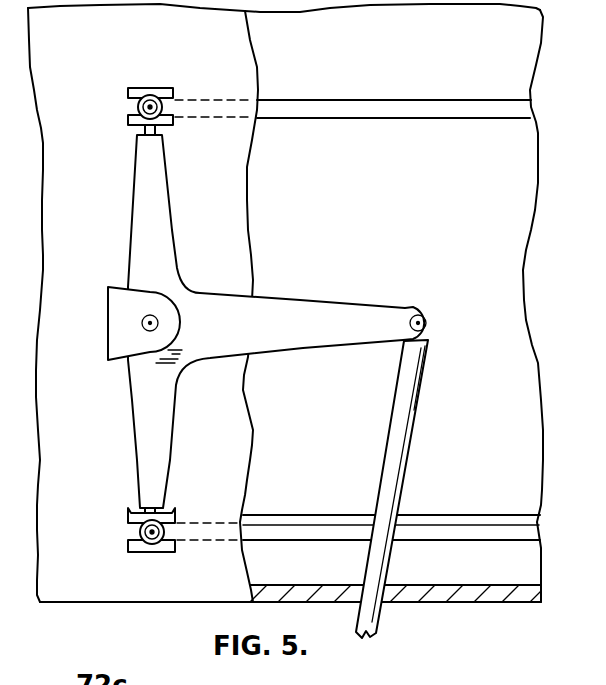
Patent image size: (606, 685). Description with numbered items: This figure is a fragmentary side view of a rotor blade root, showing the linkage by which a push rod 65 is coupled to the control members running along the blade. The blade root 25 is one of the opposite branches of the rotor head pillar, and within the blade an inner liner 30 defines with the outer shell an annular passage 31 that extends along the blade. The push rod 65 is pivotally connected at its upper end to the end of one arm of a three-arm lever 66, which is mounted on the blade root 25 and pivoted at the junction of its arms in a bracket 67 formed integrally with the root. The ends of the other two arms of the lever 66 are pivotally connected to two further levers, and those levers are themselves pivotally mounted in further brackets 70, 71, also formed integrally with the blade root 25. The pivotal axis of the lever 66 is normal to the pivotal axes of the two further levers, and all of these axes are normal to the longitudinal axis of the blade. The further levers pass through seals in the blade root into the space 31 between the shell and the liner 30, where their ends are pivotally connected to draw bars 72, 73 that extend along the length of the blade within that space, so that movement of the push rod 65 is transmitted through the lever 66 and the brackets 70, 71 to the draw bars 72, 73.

The blade root 25 is at (476, 598).
The inner liner 30 is at (490, 423).
The annular passage 31 is at (450, 579).
The push rod 65 is at (378, 622).
The three-arm lever 66 is at (326, 310).
The bracket 67 is at (115, 310).
The bracket 70 is at (162, 92).
The bracket 71 is at (168, 517).
The draw bar 72 is at (360, 108).
The draw bar 73 is at (305, 532).